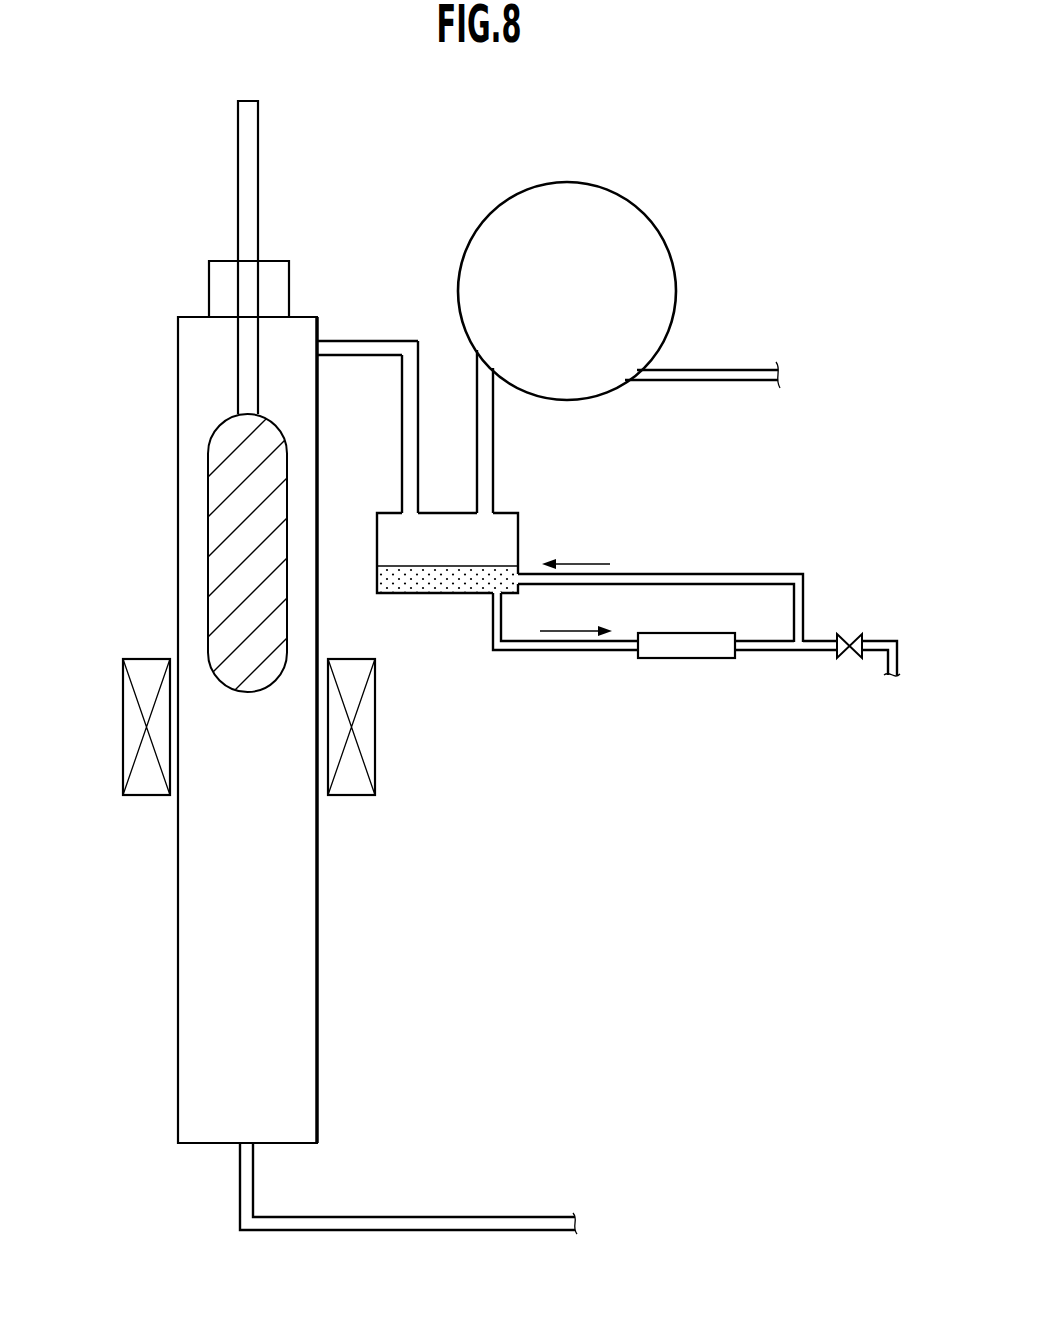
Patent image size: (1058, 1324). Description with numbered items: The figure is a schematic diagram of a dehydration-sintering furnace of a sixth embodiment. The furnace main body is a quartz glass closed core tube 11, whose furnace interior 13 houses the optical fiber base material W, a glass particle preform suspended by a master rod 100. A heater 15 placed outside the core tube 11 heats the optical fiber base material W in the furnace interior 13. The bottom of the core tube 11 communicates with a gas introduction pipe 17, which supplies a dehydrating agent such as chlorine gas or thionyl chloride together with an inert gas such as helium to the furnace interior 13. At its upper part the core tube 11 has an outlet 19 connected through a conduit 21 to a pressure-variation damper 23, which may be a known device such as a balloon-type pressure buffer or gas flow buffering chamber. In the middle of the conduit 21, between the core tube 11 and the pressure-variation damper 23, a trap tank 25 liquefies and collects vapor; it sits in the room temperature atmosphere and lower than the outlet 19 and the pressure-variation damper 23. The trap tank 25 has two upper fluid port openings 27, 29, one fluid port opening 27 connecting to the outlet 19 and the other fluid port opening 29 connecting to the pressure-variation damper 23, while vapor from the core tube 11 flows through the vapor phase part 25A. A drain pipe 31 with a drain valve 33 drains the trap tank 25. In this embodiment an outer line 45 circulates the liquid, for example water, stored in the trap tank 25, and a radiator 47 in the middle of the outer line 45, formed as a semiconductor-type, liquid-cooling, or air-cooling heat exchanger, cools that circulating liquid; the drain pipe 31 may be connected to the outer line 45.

The core tube 11 is at (318, 926).
The furnace interior 13 is at (308, 1022).
The heater 15 is at (365, 731).
The gas introduction pipe 17 is at (470, 1217).
The outlet 19 is at (315, 348).
The conduit 21 is at (407, 400).
The pressure-variation damper 23 is at (640, 203).
The trap tank 25 is at (522, 539).
The vapor phase part 25A is at (435, 553).
The fluid port opening 27 is at (407, 512).
The fluid port opening 29 is at (487, 512).
The drain pipe 31 is at (887, 641).
The drain valve 33 is at (849, 634).
The outer line 45 is at (712, 575).
The radiator 47 is at (686, 658).
The master rod 100 is at (252, 200).
The optical fiber base material W is at (233, 558).